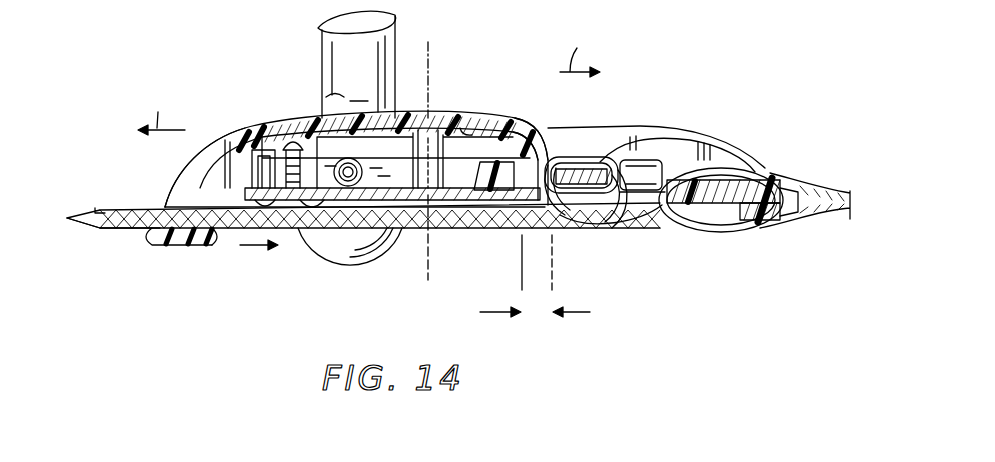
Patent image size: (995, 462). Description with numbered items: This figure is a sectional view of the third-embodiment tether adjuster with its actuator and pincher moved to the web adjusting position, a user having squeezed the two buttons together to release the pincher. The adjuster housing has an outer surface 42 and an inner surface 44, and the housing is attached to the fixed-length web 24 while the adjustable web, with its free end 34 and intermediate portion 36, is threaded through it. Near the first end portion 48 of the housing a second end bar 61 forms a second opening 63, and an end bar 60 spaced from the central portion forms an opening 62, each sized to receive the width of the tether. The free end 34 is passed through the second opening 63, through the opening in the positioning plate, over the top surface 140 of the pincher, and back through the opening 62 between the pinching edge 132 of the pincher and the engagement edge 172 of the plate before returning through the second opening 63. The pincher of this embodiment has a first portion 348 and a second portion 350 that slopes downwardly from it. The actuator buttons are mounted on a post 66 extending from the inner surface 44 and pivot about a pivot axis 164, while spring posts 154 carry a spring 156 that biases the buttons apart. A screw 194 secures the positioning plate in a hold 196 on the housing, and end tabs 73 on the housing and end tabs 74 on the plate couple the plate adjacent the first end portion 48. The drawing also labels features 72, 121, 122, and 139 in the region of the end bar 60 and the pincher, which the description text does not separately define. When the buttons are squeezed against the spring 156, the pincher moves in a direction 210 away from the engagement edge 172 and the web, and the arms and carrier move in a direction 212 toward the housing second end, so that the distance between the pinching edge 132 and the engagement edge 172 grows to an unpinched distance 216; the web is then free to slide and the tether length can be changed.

The fixed-length web 24 is at (802, 192).
The free end 34 is at (115, 208).
The intermediate portion 36 is at (106, 228).
The outer surface 42 is at (440, 118).
The inner surface 44 is at (473, 133).
The first end portion 48 is at (143, 232).
The end bar 60 is at (735, 188).
The second end bar 61 is at (187, 240).
The opening 62 is at (738, 168).
The second opening 63 is at (218, 206).
The post 66 is at (408, 238).
The clamp end 72 is at (784, 228).
The end tab 73 is at (240, 215).
The end tab 74 is at (748, 214).
The block 121 is at (640, 176).
The anchor 122 is at (572, 165).
The pinching edge 132 is at (527, 135).
The block 139 is at (626, 161).
The top surface 140 is at (583, 170).
The spring post 154 is at (343, 183).
The spring 156 is at (345, 190).
The pivot axis 164 is at (430, 52).
The engagement edge 172 is at (517, 138).
The screw 194 is at (292, 130).
The hold 196 is at (310, 128).
The direction 210 is at (161, 113).
The direction 212 is at (576, 52).
The unpinched distance 216 is at (553, 279).
The first portion 348 is at (572, 166).
The second portion 350 is at (606, 213).